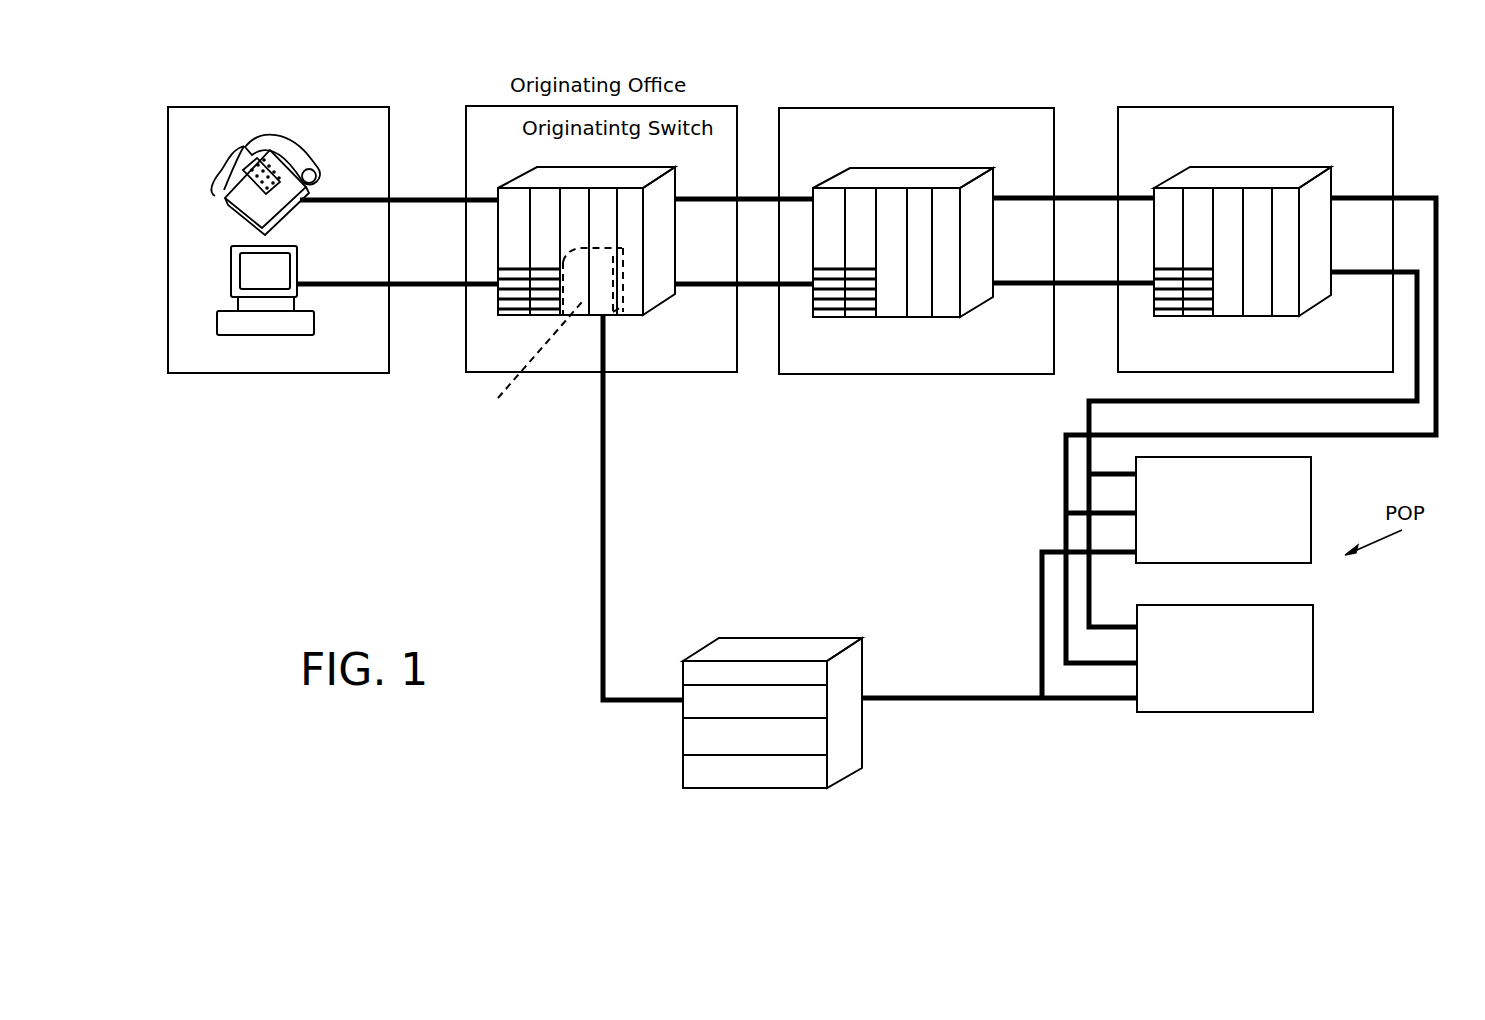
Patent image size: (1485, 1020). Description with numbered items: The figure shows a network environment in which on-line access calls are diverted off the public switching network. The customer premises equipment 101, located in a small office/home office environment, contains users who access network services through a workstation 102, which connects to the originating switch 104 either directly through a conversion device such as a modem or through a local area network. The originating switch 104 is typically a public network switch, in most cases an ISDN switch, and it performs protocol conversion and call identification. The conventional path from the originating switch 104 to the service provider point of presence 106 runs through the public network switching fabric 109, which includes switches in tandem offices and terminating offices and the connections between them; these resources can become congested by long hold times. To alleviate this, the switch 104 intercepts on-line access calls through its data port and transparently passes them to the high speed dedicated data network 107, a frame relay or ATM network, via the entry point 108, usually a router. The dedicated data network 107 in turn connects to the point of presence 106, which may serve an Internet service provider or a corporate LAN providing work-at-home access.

The customer premises equipment 101 is at (357, 107).
The workstation 102 is at (230, 262).
The originating switch 104 is at (585, 165).
The service provider point of presence 106 is at (1312, 497).
The dedicated data network 107 is at (952, 705).
The entry point 108 is at (682, 782).
The public network switching fabric 109 is at (990, 108).